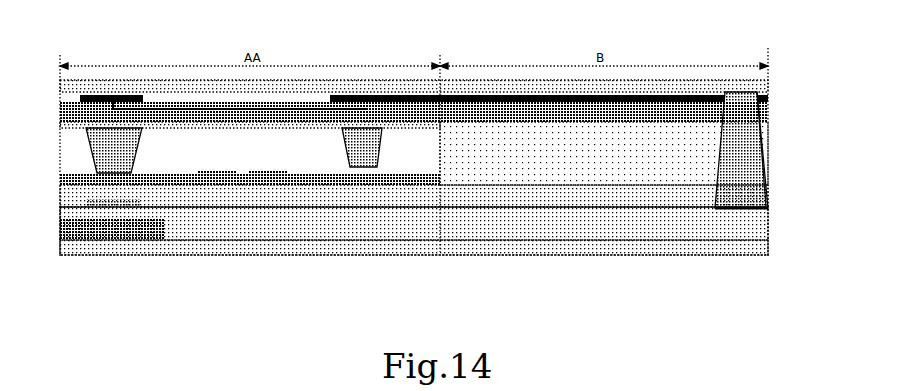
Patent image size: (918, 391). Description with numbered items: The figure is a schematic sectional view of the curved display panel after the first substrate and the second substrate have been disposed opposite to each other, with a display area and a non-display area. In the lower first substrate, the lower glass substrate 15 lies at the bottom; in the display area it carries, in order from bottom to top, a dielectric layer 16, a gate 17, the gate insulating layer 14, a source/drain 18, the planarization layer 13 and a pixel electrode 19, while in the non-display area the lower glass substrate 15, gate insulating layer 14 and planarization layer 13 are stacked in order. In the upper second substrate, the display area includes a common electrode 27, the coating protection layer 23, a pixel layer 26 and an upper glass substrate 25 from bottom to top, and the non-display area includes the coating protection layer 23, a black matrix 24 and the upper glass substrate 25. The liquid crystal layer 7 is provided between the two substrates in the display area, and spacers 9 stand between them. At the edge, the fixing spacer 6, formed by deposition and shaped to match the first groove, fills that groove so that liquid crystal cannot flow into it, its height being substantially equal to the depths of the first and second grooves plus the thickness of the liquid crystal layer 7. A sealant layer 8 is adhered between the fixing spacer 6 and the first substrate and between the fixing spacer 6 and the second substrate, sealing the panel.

The fixing spacer 6 is at (750, 160).
The liquid crystal layer 7 is at (320, 153).
The sealant layer 8 is at (490, 160).
The spacer 9 is at (117, 153).
The planarization layer 13 is at (593, 200).
The gate insulating layer 14 is at (752, 235).
The lower glass substrate 15 is at (750, 248).
The dielectric layer 16 is at (95, 241).
The gate 17 is at (127, 241).
The source/drain 18 is at (105, 203).
The pixel electrode 19 is at (262, 178).
The coating protection layer 23 is at (538, 108).
The black matrix 24 is at (675, 95).
The upper glass substrate 25 is at (630, 88).
The pixel layer 26 is at (267, 102).
The common electrode 27 is at (215, 127).